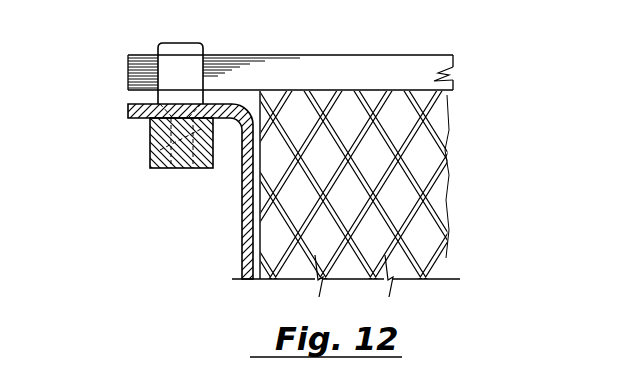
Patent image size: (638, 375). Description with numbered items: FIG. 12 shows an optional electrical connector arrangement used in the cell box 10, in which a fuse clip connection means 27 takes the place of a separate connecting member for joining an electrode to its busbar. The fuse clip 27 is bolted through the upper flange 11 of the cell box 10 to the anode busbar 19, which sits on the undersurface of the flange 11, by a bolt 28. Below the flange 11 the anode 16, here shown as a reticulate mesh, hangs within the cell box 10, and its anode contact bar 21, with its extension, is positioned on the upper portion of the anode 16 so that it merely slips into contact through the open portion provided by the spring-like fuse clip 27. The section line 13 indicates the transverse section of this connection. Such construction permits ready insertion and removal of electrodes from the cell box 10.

The cell box 10 is at (243, 233).
The upper flange 11 is at (128, 118).
The outlet nozzle 13 is at (93, 14).
The anode 16 is at (434, 220).
The anode busbar 19 is at (149, 147).
The anode contact bar 21 is at (402, 55).
The fuse clip connection means 27 is at (201, 44).
The bolt 28 is at (156, 170).